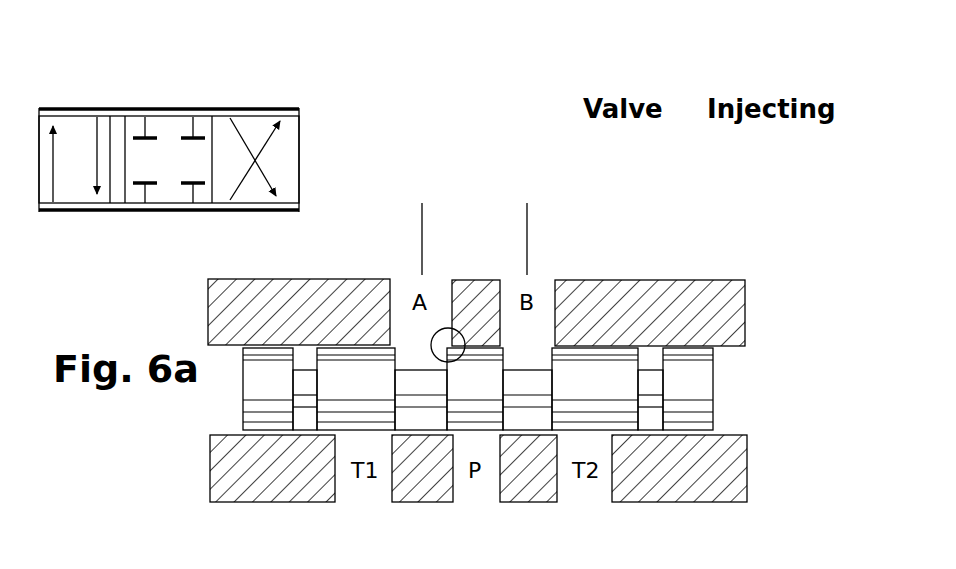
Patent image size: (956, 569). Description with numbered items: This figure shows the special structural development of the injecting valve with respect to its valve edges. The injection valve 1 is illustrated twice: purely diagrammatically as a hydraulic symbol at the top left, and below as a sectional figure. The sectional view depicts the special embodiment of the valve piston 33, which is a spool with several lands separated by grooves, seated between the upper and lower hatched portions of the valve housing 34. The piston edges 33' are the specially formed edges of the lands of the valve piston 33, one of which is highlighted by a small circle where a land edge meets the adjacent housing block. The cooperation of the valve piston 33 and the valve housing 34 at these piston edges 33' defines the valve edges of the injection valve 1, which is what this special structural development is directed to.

The injection valve 1 is at (201, 101).
The valve piston 33 is at (521, 389).
The piston edges 33' is at (450, 293).
The valve housing 34 is at (695, 487).